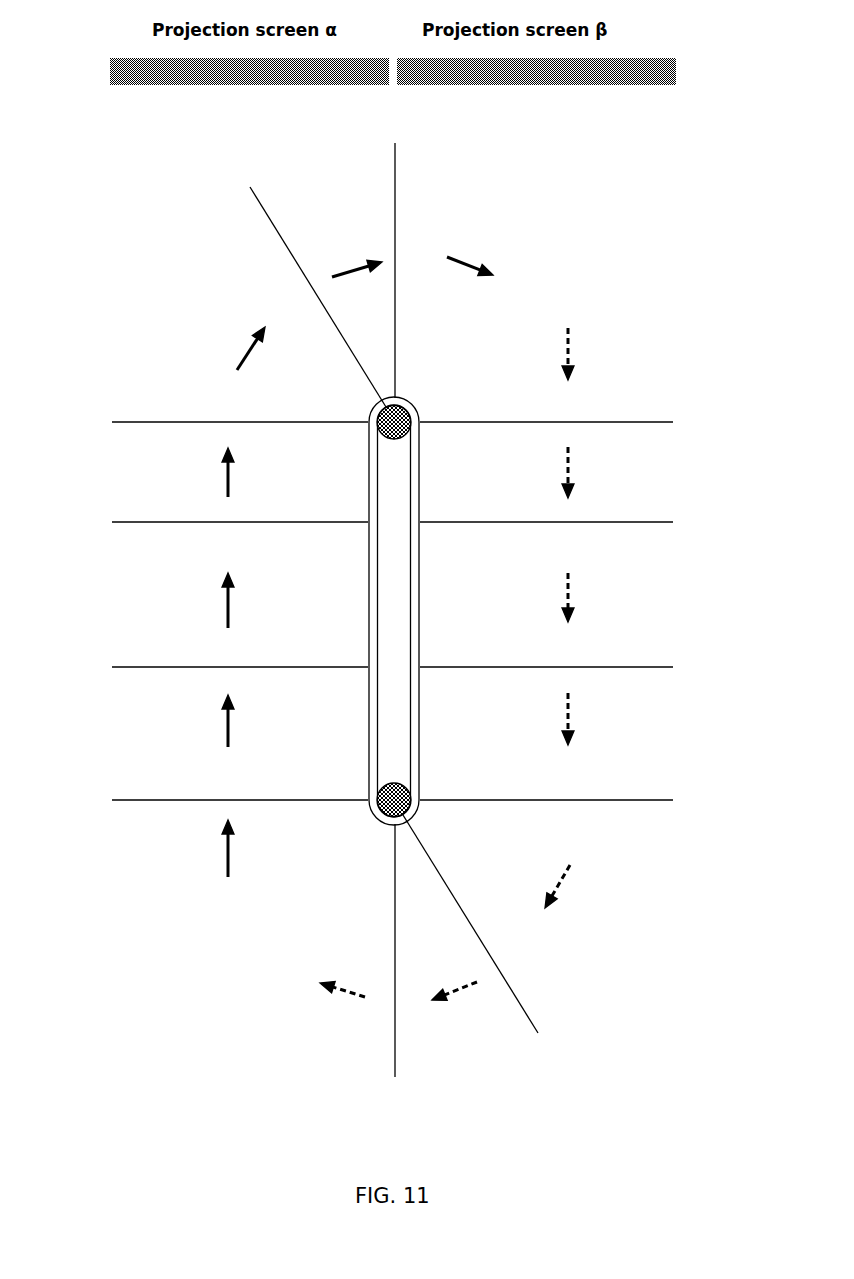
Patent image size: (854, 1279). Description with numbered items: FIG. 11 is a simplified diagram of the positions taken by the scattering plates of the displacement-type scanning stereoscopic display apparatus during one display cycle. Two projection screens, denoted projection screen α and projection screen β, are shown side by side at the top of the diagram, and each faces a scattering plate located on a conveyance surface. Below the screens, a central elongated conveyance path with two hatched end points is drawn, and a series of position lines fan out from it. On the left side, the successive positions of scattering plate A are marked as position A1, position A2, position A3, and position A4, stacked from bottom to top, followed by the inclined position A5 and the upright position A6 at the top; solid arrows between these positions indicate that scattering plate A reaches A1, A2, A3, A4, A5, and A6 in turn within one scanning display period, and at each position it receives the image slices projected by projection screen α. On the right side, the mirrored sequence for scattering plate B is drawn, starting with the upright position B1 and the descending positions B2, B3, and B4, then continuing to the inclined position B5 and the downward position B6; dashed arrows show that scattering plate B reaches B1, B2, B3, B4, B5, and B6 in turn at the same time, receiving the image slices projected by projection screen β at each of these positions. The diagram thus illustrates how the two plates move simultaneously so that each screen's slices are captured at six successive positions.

The position A1 of scattering plate A A1 is at (215, 803).
The position A2 of scattering plate A A2 is at (215, 673).
The position A3 of scattering plate A A3 is at (215, 525).
The position A4 of scattering plate A A4 is at (215, 421).
The position A5 of scattering plate A A5 is at (303, 277).
The position A6 of scattering plate A A6 is at (402, 253).
The position B1 of scattering plate B B1 is at (577, 426).
The position B2 of scattering plate B B2 is at (577, 526).
The position B3 of scattering plate B B3 is at (577, 678).
The position B4 of scattering plate B B4 is at (577, 810).
The position B5 of scattering plate B B5 is at (493, 951).
The position B6 of scattering plate B B6 is at (404, 976).